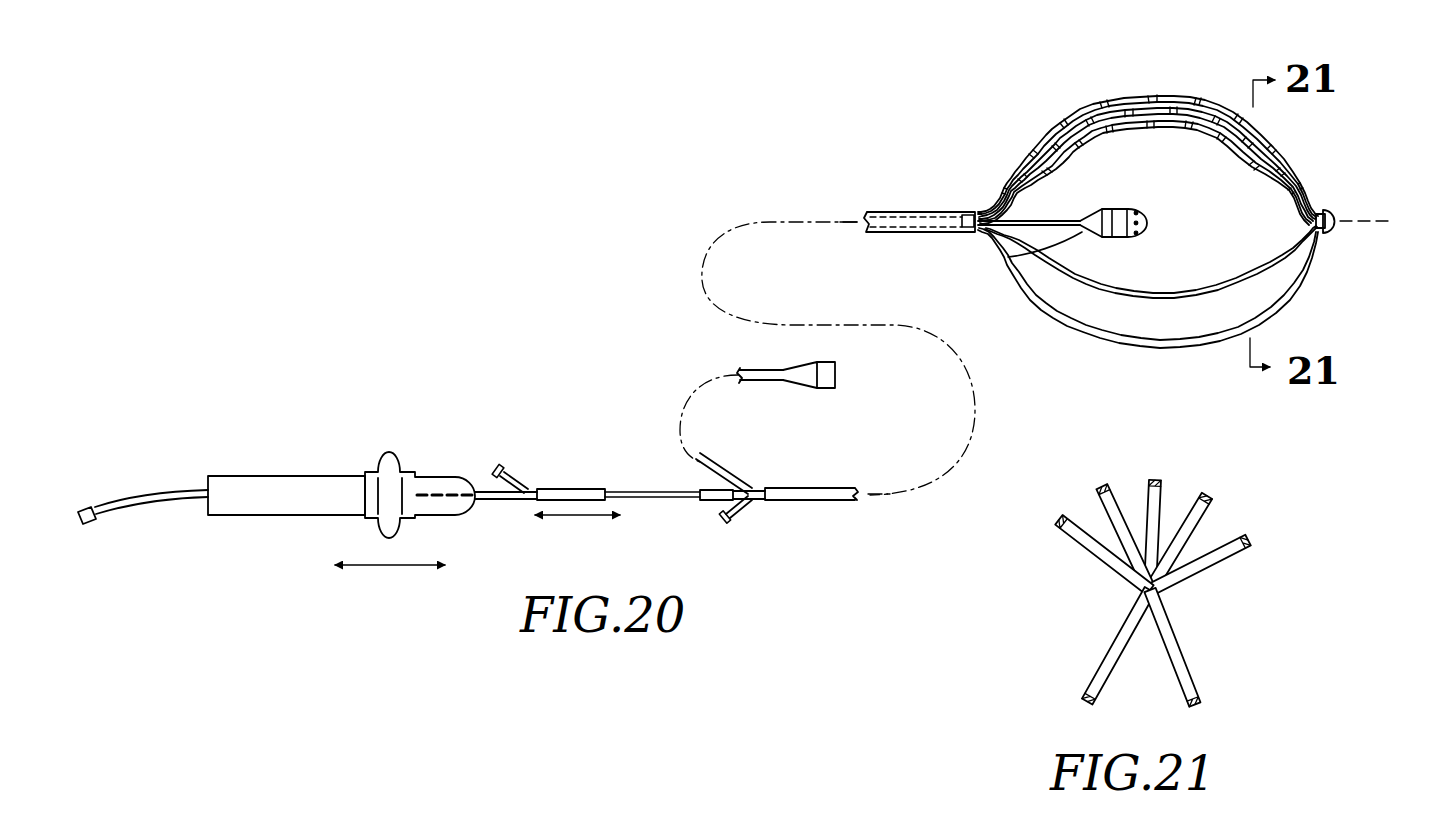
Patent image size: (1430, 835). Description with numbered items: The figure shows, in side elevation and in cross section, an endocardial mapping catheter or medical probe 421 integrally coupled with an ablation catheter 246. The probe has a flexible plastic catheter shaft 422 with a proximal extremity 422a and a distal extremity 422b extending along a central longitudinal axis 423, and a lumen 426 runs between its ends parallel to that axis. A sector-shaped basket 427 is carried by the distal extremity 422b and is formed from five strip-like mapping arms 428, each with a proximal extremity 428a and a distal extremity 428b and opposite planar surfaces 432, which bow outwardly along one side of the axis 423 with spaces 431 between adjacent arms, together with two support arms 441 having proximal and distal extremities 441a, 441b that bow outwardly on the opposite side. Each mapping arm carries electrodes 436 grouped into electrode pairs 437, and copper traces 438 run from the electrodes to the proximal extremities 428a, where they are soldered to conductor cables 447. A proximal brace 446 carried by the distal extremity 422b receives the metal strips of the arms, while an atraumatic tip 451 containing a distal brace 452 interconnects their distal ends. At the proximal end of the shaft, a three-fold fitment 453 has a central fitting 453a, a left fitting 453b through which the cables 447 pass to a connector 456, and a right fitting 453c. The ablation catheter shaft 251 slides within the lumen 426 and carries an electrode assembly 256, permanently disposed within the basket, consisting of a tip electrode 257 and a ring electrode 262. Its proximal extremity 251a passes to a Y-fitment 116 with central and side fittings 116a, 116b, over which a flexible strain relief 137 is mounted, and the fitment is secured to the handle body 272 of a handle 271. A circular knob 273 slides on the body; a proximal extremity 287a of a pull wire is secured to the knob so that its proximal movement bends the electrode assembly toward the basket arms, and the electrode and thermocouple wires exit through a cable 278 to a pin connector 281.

In FIG. 20, the handle 271 is at (236, 470).
In FIG. 20, the handle body 272 is at (316, 517).
In FIG. 20, the circular knob 273 is at (389, 456).
In FIG. 20, the cable 278 is at (177, 503).
In FIG. 20, the pin connector 281 is at (88, 503).
In FIG. 20, the proximal extremity of pull wire 287a is at (447, 497).
In FIG. 20, the Y-fitment 116 is at (525, 484).
In FIG. 20, the central fitting 116a is at (497, 498).
In FIG. 20, the side fitting 116b is at (499, 468).
In FIG. 20, the flexible strain relief 137 is at (561, 490).
In FIG. 20, the proximal extremity of ablation catheter shaft 251a is at (628, 491).
In FIG. 20, the three-fold fitment 453 is at (759, 488).
In FIG. 20, the central fitting 453a is at (718, 500).
In FIG. 20, the left fitting 453b is at (716, 466).
In FIG. 20, the right fitting 453c is at (740, 512).
In FIG. 20, the proximal extremity of catheter shaft 422a is at (790, 496).
In FIG. 20, the conductor cables 447 is at (775, 372).
In FIG. 20, the connector 456 is at (805, 375).
In FIG. 20, the catheter shaft 422 is at (880, 208).
In FIG. 20, the distal extremity of catheter shaft 422b is at (932, 236).
In FIG. 20, the lumen 426 is at (905, 220).
In FIG. 20, the proximal brace 446 is at (966, 210).
In FIG. 20, the medical probe 421 is at (1321, 132).
In FIG. 20, the sector-shaped basket 427 is at (1277, 136).
In FIG. 20, the mapping arms 428 is at (1191, 95).
In FIG. 21, the mapping arms 428 is at (1083, 552).
In FIG. 20, the proximal extremities of mapping arms 428a is at (1064, 160).
In FIG. 20, the distal extremities of mapping arms 428b is at (1262, 172).
In FIG. 20, the spaces 431 is at (1105, 112).
In FIG. 21, the spaces 431 is at (1147, 490).
In FIG. 20, the outer and inner planar surfaces 432 is at (1117, 102).
In FIG. 21, the outer and inner planar surfaces 432 is at (1202, 510).
In FIG. 20, the electrodes 436 is at (1243, 158).
In FIG. 20, the electrode pairs 437 is at (1312, 166).
In FIG. 20, the traces 438 is at (1034, 146).
In FIG. 20, the distal brace 452 is at (1321, 210).
In FIG. 20, the central longitudinal axis 423 is at (1393, 223).
In FIG. 20, the atraumatic tip 451 is at (1328, 233).
In FIG. 21, the atraumatic tip 451 is at (1163, 598).
In FIG. 20, the support arms 441 is at (1158, 305).
In FIG. 21, the support arms 441 is at (1088, 686).
In FIG. 20, the proximal extremities of support arms 441a is at (1020, 280).
In FIG. 20, the distal extremities of support arms 441b is at (1292, 283).
In FIG. 20, the tip electrode 257 is at (1120, 245).
In FIG. 20, the ablation catheter shaft 251 is at (1010, 257).
In FIG. 20, the ring electrode 262 is at (1106, 209).
In FIG. 20, the electrode assembly 256 is at (1150, 216).
In FIG. 20, the ablation catheter 246 is at (1152, 242).